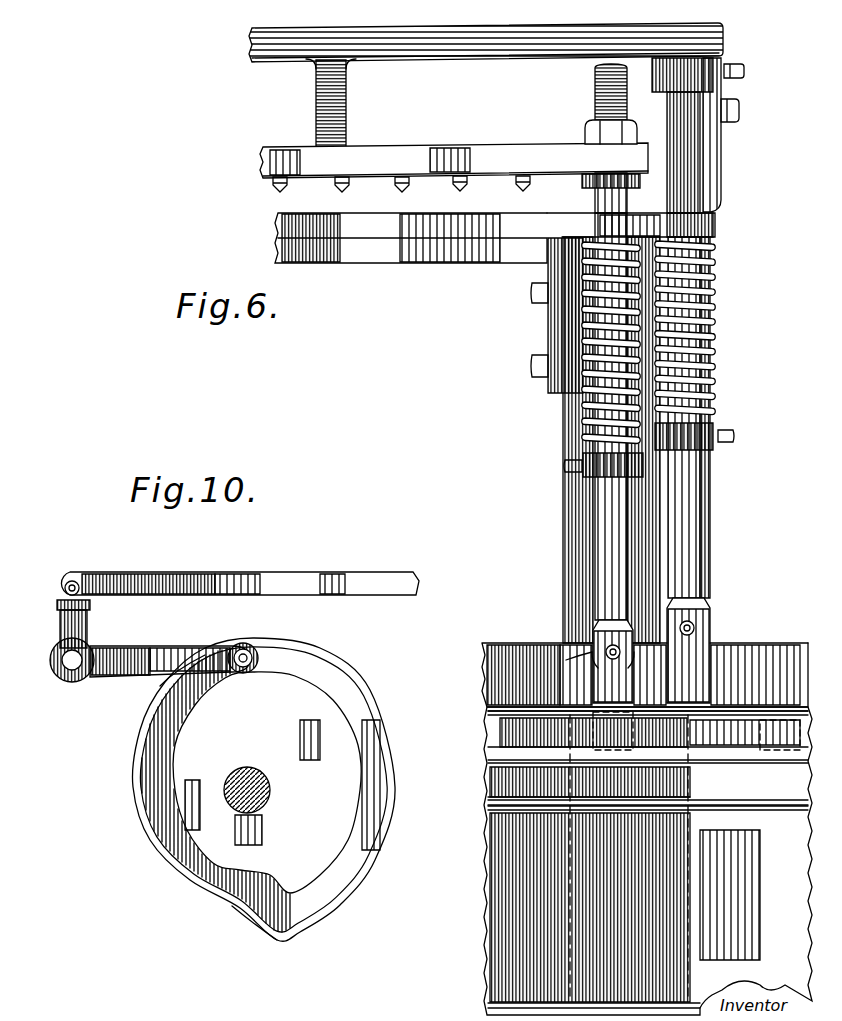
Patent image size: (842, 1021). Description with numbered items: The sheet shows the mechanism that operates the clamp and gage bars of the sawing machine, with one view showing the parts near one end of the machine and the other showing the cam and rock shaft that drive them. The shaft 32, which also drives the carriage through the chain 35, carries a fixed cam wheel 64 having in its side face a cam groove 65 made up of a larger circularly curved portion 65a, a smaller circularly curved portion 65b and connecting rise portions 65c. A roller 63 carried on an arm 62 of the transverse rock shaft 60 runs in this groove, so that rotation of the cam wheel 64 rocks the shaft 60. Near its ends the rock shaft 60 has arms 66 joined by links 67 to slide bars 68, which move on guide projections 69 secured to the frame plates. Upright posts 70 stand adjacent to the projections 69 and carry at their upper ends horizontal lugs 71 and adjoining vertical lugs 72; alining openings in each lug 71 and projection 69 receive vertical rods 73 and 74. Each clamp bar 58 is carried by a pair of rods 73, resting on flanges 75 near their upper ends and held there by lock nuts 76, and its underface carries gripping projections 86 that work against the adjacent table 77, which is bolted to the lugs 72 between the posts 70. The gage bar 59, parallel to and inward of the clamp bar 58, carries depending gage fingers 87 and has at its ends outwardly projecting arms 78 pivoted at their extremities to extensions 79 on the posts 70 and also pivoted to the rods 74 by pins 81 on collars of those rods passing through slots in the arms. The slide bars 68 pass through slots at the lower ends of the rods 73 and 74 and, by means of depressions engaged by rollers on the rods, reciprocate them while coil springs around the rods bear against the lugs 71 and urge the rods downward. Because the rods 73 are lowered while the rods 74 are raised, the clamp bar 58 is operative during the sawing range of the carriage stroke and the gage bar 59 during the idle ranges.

In FIG. 6, the gage bar 59 is at (486, 42).
In FIG. 6, the gage fingers 87 is at (328, 121).
In FIG. 6, the clamp bar 58 is at (432, 153).
In FIG. 6, the gripping projections 86 is at (405, 184).
In FIG. 6, the lock nuts 76 is at (586, 133).
In FIG. 6, the flanges 75 is at (580, 183).
In FIG. 6, the pins 81 is at (744, 71).
In FIG. 6, the arms 78 is at (721, 99).
In FIG. 6, the extensions 79 is at (716, 174).
In FIG. 6, the horizontal lugs 71 is at (711, 223).
In FIG. 6, the table 77 is at (456, 275).
In FIG. 6, the vertical lugs 72 is at (573, 318).
In FIG. 6, the chain 35 is at (709, 336).
In FIG. 6, the upright posts 70 is at (580, 520).
In FIG. 6, the rods 73 is at (612, 560).
In FIG. 6, the rods 74 is at (698, 554).
In FIG. 6, the slide bars 68 is at (740, 647).
In FIG. 6, the guide projections 69 is at (737, 702).
In FIG. 6, the rise portions 65c is at (592, 655).
In FIG. 10, the rise portions 65c is at (282, 904).
In FIG. 10, the links 67 is at (318, 594).
In FIG. 10, the arms 66 is at (88, 628).
In FIG. 10, the arm 62 is at (150, 670).
In FIG. 10, the rock shaft 60 is at (70, 682).
In FIG. 10, the roller 63 is at (255, 670).
In FIG. 10, the cam groove 65 is at (378, 797).
In FIG. 10, the larger circularly curved portion 65a is at (370, 737).
In FIG. 10, the smaller circularly curved portion 65b is at (203, 882).
In FIG. 10, the cam wheel 64 is at (340, 820).
In FIG. 10, the shaft 32 is at (271, 790).